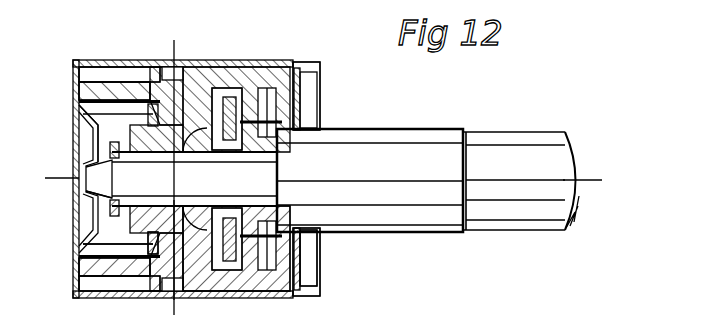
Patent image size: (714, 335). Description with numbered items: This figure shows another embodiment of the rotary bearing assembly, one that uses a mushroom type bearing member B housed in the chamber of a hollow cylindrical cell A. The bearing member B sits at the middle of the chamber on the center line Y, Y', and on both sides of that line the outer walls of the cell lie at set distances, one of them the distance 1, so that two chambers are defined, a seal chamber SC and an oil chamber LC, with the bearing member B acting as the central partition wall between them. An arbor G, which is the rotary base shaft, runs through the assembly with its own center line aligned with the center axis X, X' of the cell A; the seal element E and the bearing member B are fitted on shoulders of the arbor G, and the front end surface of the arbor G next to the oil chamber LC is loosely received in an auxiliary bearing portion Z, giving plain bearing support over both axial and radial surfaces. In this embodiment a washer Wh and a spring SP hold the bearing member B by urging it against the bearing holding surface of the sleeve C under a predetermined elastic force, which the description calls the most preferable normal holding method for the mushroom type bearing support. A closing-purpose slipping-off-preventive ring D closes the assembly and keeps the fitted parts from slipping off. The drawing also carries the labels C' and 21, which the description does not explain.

The cell A is at (124, 64).
The bearing member B is at (190, 222).
The sleeve C is at (151, 172).
The end cover C' is at (318, 281).
The closing-purpose slipping-off-preventive ring D is at (303, 81).
The seal element E is at (302, 122).
The arbor G is at (413, 133).
The seal chamber SC is at (267, 100).
The oil chamber LC is at (108, 233).
The spring SP is at (97, 254).
The washer Wh is at (185, 242).
The center axis X is at (52, 179).
The center axis X' is at (594, 180).
The center line Y is at (176, 162).
The center line Y' is at (186, 267).
The auxiliary bearing portion Z is at (90, 165).
The distance 1 is at (70, 190).
The flange 21 is at (313, 272).